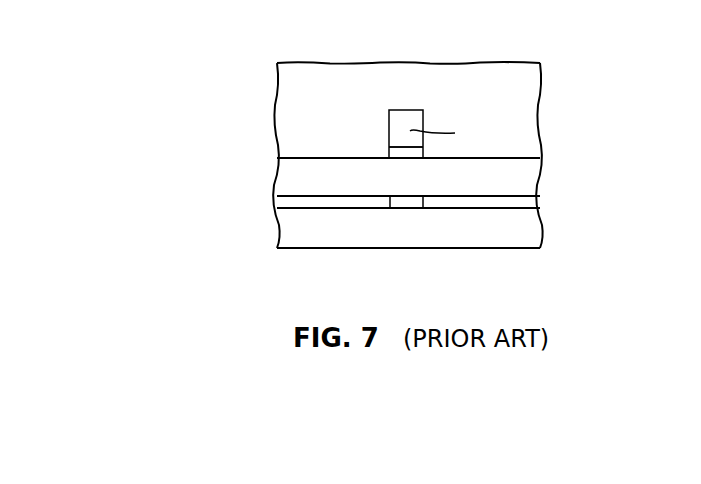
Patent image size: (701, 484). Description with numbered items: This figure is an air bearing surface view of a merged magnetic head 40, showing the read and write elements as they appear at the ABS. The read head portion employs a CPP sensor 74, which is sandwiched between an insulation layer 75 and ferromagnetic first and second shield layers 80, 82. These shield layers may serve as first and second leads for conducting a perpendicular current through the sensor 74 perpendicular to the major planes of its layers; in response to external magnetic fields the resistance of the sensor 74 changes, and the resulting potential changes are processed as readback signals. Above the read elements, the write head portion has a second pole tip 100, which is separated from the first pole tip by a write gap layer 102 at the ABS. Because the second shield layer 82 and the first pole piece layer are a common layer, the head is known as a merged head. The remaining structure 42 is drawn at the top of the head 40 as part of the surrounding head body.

The merged magnetic head 40 is at (565, 76).
The upper insulating/dielectric layer 42 is at (284, 87).
The second shield layer 82 is at (284, 171).
The first shield layer 80 is at (527, 228).
The insulation layer 75 is at (307, 204).
The CPP sensor 74 is at (407, 209).
The second pole tip 100 is at (412, 113).
The write gap layer 102 is at (405, 154).